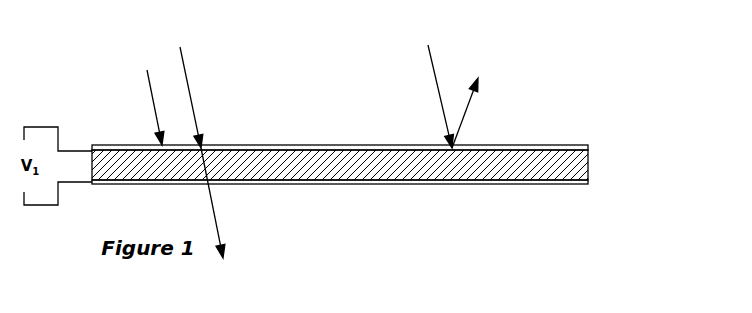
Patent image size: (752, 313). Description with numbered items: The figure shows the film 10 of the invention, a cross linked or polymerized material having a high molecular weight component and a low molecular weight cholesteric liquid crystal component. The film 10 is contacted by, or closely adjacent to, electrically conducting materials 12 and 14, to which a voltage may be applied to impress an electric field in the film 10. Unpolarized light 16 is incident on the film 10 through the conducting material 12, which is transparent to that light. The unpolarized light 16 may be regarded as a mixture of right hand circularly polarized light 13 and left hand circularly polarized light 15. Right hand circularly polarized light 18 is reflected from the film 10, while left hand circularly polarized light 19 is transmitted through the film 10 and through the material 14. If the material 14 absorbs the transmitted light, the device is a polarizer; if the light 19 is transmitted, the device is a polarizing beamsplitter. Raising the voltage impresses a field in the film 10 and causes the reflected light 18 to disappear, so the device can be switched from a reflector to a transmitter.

The film 10 is at (588, 165).
The electrically conducting material 12 is at (588, 147).
The electrically conducting material 14 is at (588, 181).
The right hand circularly polarized light 13 is at (442, 120).
The left hand circularly polarized light 15 is at (197, 129).
The unpolarized light 16 is at (150, 84).
The right hand circularly polarized light 18 is at (472, 106).
The left hand circularly polarized light 19 is at (218, 230).